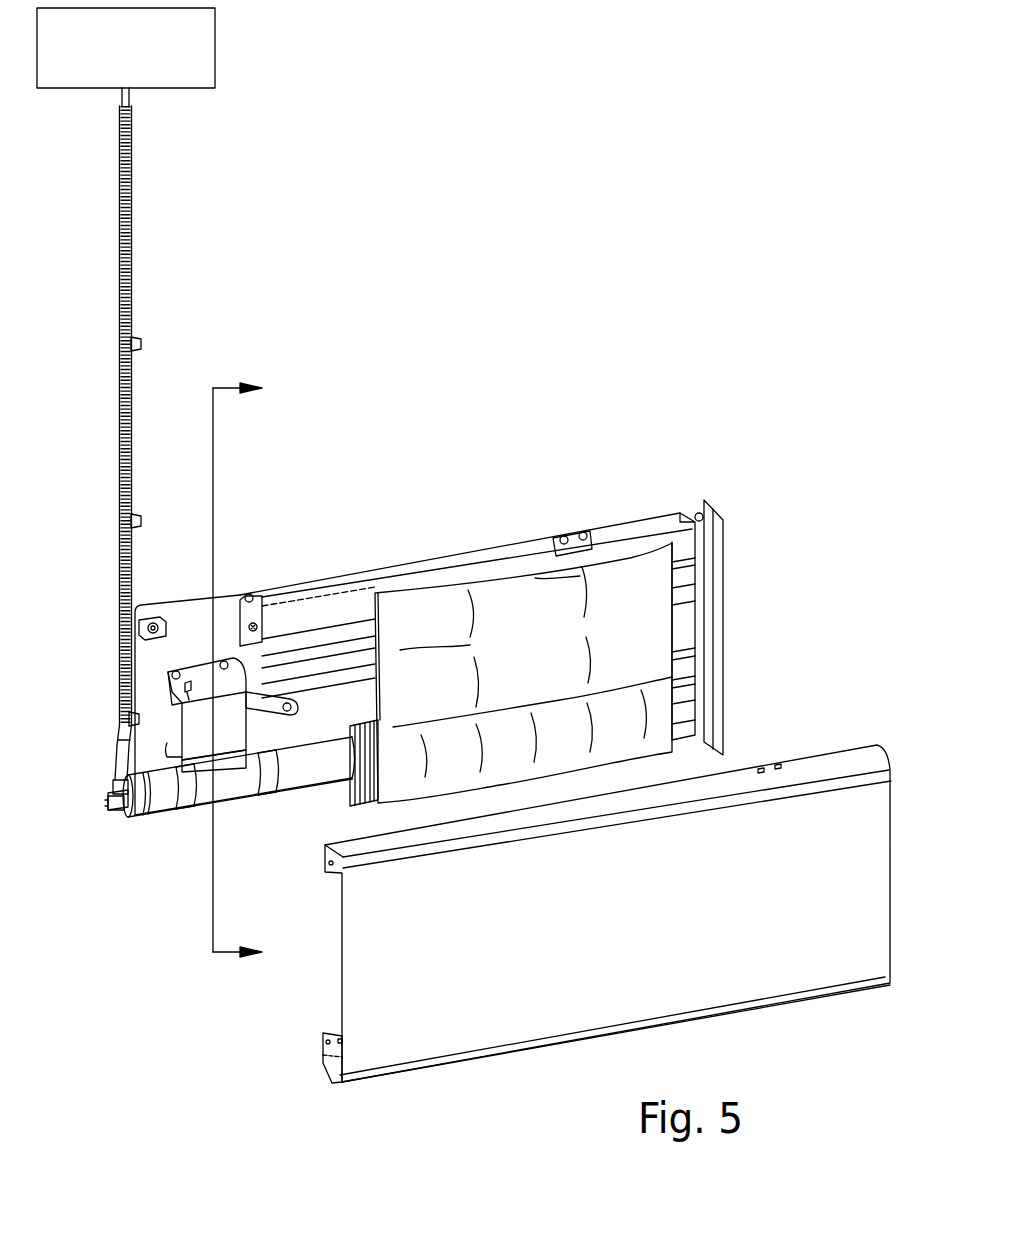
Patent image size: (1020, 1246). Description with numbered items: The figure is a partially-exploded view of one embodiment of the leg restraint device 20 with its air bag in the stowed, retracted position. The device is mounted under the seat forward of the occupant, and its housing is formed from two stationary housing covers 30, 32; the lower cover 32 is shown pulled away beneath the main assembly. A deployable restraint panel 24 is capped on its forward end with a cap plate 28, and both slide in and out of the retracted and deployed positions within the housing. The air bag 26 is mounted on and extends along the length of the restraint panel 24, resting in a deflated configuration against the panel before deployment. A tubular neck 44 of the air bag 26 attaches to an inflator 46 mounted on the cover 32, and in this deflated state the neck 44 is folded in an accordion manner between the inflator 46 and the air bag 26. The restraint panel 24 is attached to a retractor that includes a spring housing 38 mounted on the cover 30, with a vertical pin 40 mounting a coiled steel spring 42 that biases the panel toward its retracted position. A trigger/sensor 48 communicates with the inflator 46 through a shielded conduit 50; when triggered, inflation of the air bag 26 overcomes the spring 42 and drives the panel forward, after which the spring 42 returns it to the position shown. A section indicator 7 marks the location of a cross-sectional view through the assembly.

The section line 7- 7 is at (247, 671).
The leg restraint device 20 is at (573, 388).
The restraint panel 24 is at (350, 683).
The air bag 26 is at (350, 610).
The cap plate 28 is at (725, 565).
The housing cover 30 is at (225, 612).
The housing cover 32 is at (427, 1035).
The spring housing 38 is at (193, 735).
The vertical pin 40 is at (172, 717).
The coiled steel spring 42 is at (265, 707).
The tubular neck 44 is at (345, 800).
The inflator 46 is at (170, 797).
The trigger/sensor 48 is at (215, 40).
The shielded conduit 50 is at (120, 455).